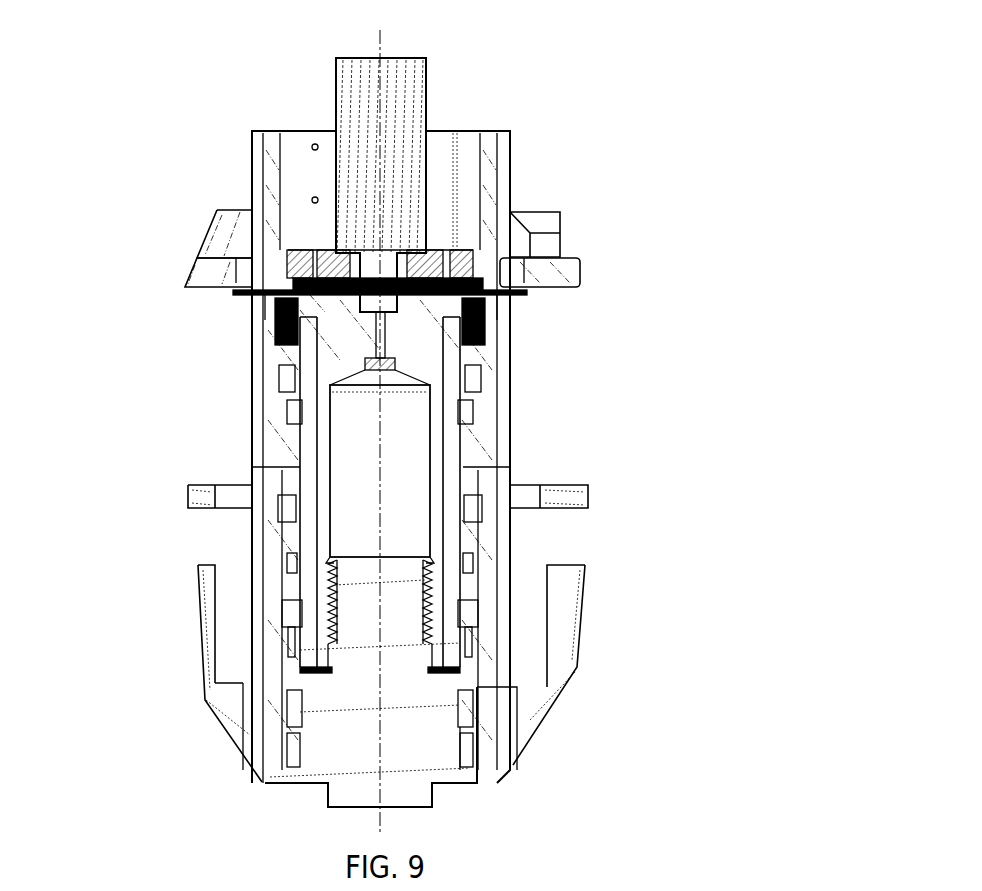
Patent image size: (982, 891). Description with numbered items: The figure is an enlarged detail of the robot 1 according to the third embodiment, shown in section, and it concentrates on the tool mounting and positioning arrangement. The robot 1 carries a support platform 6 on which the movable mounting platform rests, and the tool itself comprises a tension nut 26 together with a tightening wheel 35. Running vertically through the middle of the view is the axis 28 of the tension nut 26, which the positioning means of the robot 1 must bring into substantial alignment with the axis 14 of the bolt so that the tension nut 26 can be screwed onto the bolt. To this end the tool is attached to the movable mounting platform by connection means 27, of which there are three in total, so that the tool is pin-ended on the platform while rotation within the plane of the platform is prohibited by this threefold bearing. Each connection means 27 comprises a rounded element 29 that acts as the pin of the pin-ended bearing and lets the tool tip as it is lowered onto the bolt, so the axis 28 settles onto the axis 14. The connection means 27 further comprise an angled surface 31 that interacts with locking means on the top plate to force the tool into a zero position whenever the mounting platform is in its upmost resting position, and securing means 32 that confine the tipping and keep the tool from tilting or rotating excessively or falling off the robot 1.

The robot 1 is at (758, 65).
The axis of the tension nut 28 is at (380, 42).
The angled surface 31 is at (207, 228).
The rounded element 29 is at (237, 258).
The securing means 32 is at (257, 267).
The support platform 6 is at (570, 497).
The tension nut 26 is at (318, 600).
The tightening wheel 35 is at (288, 700).
The connection means 27 is at (470, 752).
The axis of the bolt 14 is at (380, 815).